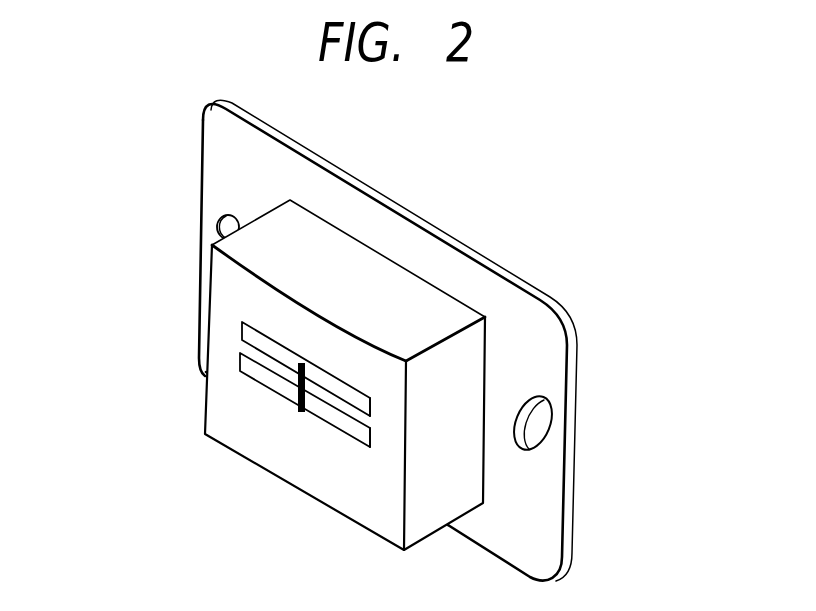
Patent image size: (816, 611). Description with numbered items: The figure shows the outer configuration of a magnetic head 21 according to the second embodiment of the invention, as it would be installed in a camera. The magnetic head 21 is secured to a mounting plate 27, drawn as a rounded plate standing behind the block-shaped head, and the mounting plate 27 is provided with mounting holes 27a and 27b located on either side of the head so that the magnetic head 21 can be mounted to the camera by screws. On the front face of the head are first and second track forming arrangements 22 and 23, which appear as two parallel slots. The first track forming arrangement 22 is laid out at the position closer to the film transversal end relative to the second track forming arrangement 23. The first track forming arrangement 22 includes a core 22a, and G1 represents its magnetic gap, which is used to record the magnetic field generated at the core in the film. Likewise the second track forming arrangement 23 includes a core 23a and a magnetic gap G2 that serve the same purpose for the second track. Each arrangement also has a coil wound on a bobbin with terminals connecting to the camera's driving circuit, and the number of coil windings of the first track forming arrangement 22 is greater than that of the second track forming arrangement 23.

The magnetic head 21 is at (423, 512).
The first track forming arrangement 22 is at (60, 385).
The core 22a is at (350, 434).
The magnetic gap G1 is at (295, 398).
The second track forming arrangement 23 is at (460, 123).
The core 23a is at (360, 398).
The magnetic gap G2 is at (307, 365).
The mounting plate 27 is at (547, 547).
The mounting hole 27a is at (547, 423).
The mounting hole 27b is at (222, 224).